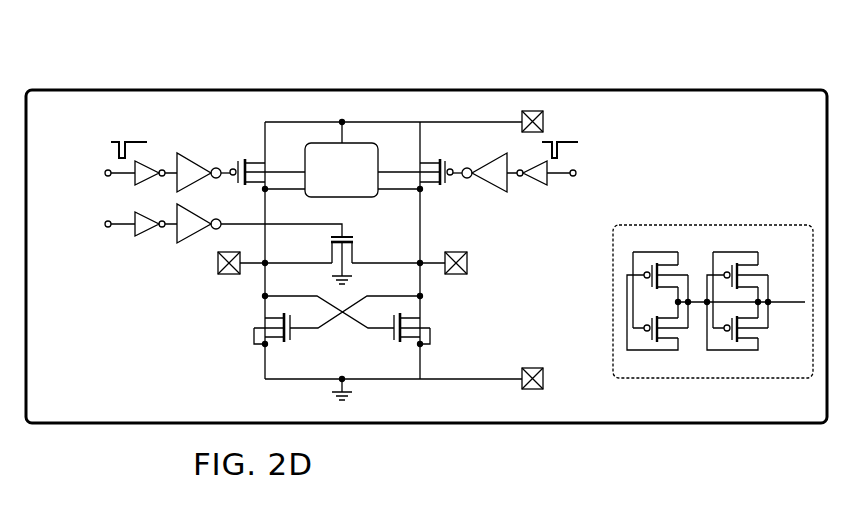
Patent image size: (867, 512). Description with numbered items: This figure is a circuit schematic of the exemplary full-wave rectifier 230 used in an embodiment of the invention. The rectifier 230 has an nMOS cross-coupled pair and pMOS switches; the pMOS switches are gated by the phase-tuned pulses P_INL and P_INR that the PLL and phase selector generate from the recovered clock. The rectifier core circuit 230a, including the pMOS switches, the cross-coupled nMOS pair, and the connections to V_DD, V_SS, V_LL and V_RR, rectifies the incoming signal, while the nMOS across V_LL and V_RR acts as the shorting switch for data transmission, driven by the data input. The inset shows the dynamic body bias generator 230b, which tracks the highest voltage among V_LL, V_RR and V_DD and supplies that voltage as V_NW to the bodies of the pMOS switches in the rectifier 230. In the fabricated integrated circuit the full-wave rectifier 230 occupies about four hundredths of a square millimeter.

The full-wave rectifier 230 is at (562, 77).
The full-wave rectifier core circuit 230a is at (335, 255).
The dynamic body bias circuit 230b is at (713, 292).